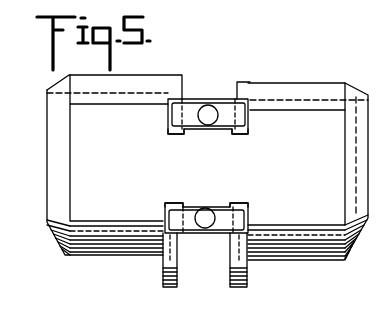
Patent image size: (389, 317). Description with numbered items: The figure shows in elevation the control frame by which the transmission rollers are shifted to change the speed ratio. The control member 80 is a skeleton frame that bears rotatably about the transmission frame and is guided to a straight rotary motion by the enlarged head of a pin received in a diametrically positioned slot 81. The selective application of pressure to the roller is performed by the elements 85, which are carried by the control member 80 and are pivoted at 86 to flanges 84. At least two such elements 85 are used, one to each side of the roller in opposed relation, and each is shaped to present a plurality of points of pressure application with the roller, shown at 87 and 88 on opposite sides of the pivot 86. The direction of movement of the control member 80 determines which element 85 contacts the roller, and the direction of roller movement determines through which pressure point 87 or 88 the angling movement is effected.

The control member 80 is at (287, 248).
The diametrically positioned slot 81 is at (234, 88).
The flanges 84 is at (189, 98).
The elements 85 is at (229, 113).
The pivot 86 is at (202, 121).
The point of pressure application 87 is at (177, 201).
The point of pressure application 88 is at (238, 201).